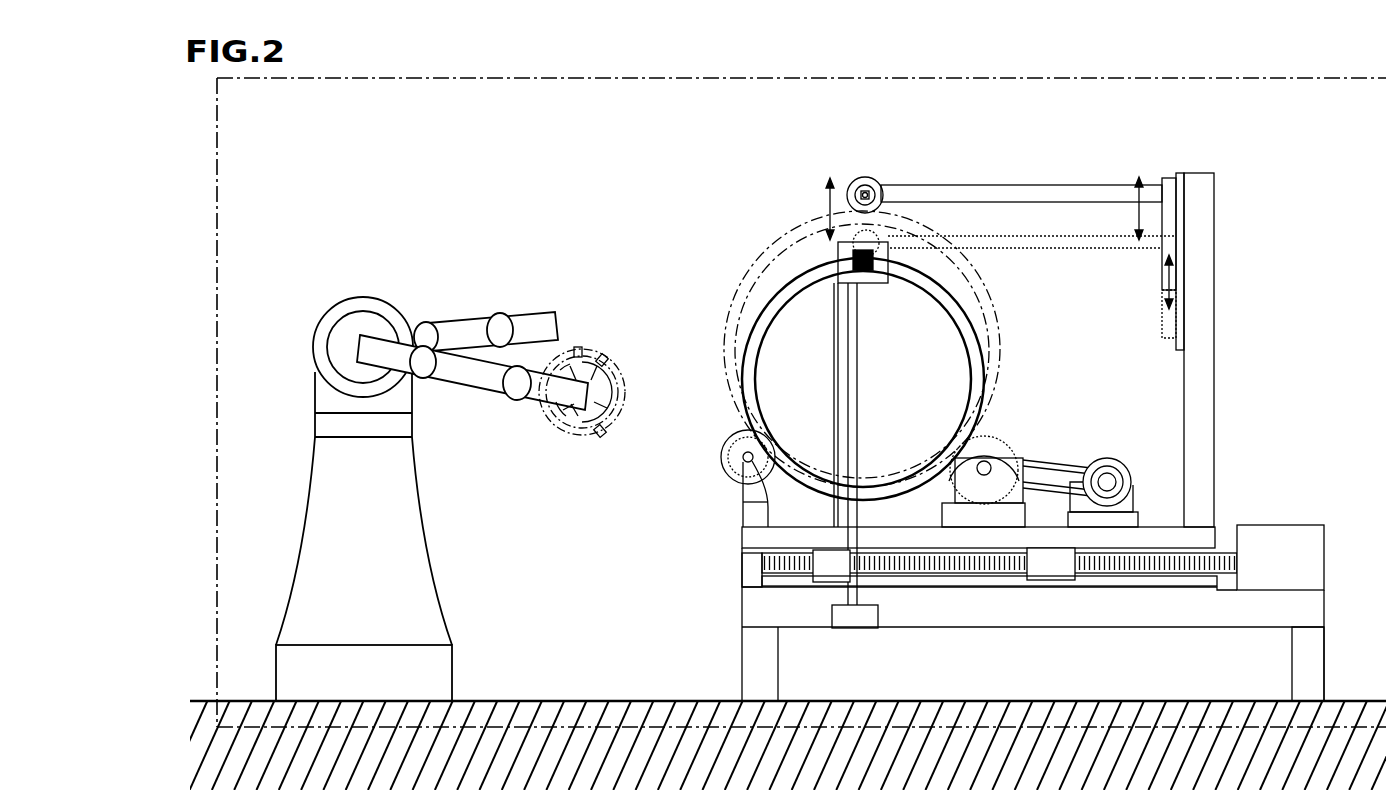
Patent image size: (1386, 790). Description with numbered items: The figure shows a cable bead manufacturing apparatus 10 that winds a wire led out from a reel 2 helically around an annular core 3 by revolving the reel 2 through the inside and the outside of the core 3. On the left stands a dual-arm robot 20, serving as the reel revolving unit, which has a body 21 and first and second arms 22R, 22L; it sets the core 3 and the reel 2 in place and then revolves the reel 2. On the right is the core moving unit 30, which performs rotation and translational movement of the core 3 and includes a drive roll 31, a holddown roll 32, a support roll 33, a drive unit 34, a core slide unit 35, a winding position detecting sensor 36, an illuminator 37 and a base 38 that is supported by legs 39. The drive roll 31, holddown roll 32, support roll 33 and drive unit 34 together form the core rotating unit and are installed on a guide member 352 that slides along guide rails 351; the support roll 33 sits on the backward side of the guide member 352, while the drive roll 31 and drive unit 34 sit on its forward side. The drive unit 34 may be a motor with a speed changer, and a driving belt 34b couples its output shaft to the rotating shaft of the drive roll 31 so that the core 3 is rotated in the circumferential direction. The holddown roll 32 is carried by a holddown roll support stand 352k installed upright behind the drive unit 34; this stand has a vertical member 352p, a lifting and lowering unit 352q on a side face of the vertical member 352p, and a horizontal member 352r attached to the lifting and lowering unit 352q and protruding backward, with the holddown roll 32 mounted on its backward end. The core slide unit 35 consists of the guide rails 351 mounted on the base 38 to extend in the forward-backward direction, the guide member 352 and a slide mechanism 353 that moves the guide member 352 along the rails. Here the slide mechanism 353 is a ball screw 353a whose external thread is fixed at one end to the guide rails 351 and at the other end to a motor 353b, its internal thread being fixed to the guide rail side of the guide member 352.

The cable bead manufacturing apparatus 10 is at (801, 402).
The reel 2 is at (598, 346).
The dual-arm robot 20 is at (410, 270).
The body 21 is at (323, 403).
The second arm 22L is at (468, 318).
The first arm 22R is at (470, 377).
The core moving unit 30 is at (713, 283).
The annular core 3 is at (958, 318).
The drive roll 31 is at (997, 428).
The holddown roll 32 is at (853, 178).
The support roll 33 is at (733, 457).
The drive unit 34 is at (1105, 458).
The driving belt 34b is at (1047, 458).
The core slide unit 35 is at (632, 590).
The guide rails 351 is at (775, 582).
The guide member 352 is at (790, 540).
The horizontal member 352r is at (990, 184).
The vertical member 352p is at (1203, 210).
The lifting and lowering unit 352q is at (1182, 247).
The holddown roll support stand 352k is at (1215, 312).
The slide mechanism 353 is at (1004, 581).
The ball screw 353a is at (973, 573).
The motor 353b is at (1272, 525).
The winding position detecting sensor 36 is at (880, 246).
The illuminator 37 is at (836, 256).
The base 38 is at (762, 617).
The legs 39 is at (1302, 652).